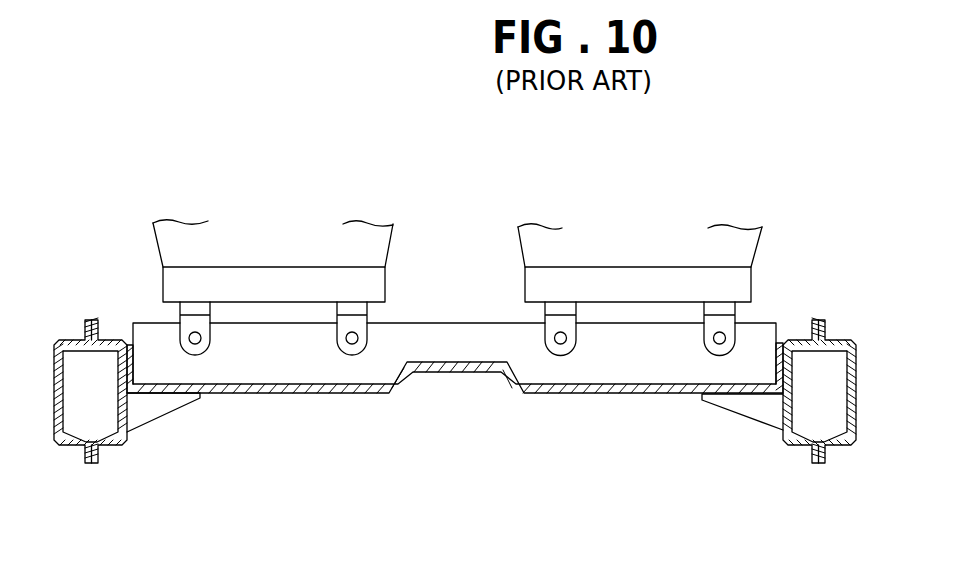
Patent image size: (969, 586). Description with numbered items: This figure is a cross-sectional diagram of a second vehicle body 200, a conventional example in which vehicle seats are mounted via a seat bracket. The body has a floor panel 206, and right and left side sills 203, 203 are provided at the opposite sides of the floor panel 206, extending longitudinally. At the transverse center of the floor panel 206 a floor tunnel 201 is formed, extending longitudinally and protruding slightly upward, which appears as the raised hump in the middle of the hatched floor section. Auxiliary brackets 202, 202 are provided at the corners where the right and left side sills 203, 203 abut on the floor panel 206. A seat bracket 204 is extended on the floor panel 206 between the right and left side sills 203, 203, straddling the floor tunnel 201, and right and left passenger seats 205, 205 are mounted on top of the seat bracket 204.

The second vehicle body 200 is at (124, 202).
The floor tunnel 201 is at (448, 373).
The auxiliary bracket 202 is at (165, 410).
The side sill 203 is at (103, 450).
The seat bracket 204 is at (285, 368).
The passenger seat 205 is at (360, 235).
The floor panel 206 is at (605, 395).